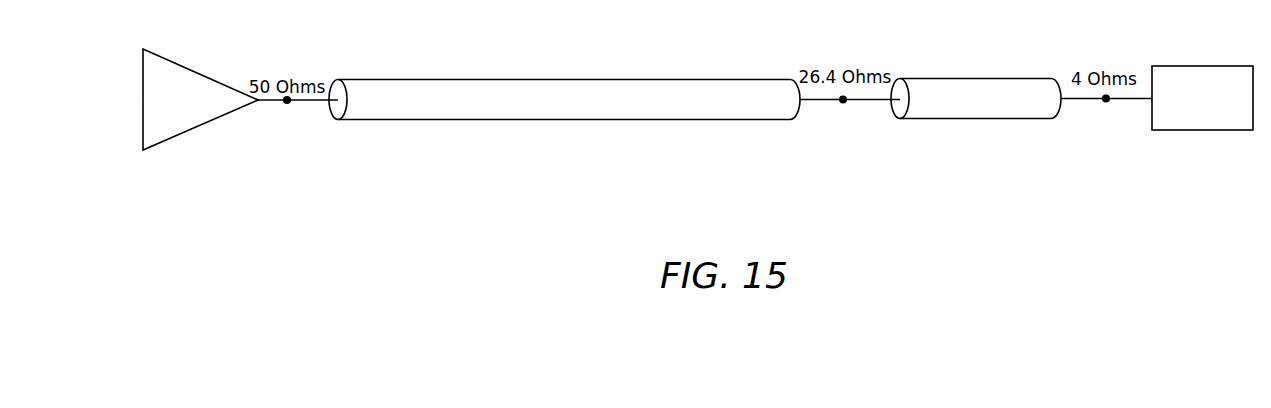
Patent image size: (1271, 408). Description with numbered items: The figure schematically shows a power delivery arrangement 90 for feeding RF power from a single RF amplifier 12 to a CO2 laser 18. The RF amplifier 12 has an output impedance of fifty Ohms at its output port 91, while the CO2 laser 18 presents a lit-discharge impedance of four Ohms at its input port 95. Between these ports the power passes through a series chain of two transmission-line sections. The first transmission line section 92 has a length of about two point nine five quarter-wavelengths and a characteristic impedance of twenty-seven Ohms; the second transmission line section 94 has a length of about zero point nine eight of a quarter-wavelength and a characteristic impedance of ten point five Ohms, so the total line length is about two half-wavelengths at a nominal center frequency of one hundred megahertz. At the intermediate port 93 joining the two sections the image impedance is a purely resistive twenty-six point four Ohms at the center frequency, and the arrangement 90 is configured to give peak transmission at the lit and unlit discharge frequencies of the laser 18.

The RF amplifier 12 is at (195, 130).
The CO2 laser 18 is at (1215, 130).
The power delivery arrangement 90 is at (843, 197).
The port at RF amplifier output 91 is at (289, 103).
The first transmission line section 92 is at (537, 120).
The intermediate port 93 is at (846, 103).
The second transmission line section 94 is at (970, 119).
The port at laser input 95 is at (1107, 103).